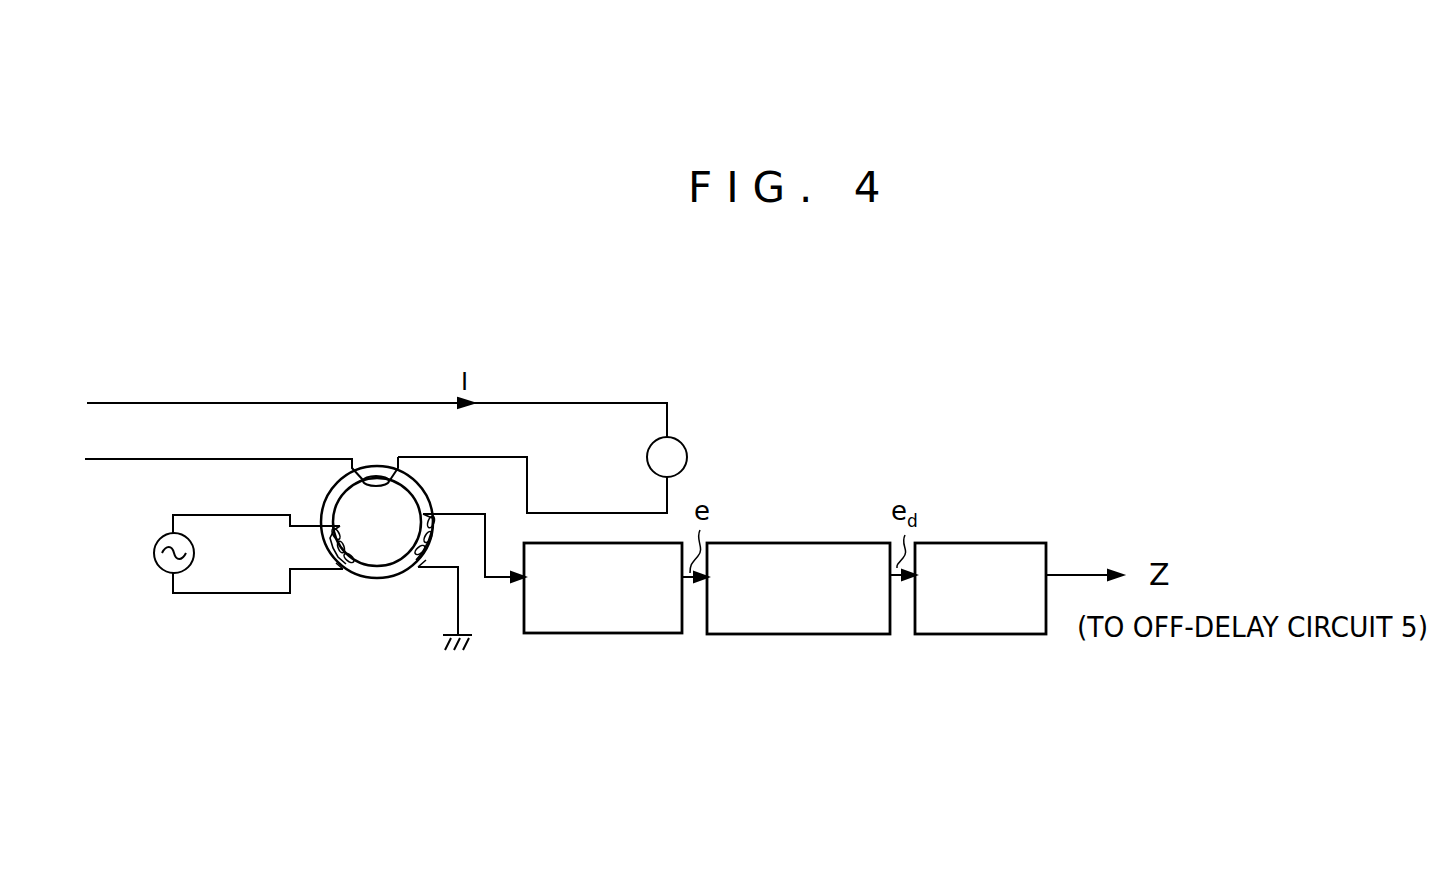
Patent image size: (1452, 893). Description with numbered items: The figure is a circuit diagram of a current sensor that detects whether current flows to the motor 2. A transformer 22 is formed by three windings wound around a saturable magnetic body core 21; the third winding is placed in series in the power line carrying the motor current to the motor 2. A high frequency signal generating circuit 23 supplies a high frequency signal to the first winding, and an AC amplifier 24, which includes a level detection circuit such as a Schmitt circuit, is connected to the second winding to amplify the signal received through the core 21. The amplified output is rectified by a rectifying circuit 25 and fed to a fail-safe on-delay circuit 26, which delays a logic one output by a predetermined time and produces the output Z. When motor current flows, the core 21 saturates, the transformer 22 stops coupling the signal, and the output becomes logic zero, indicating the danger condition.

The motor 2 is at (688, 453).
The saturable magnetic body core 21 is at (331, 498).
The transformer 22 is at (377, 586).
The high frequency signal generating circuit 23 is at (158, 542).
The AC amplifier 24 is at (612, 636).
The rectifying circuit 25 is at (750, 636).
The fail-safe on-delay circuit 26 is at (917, 636).